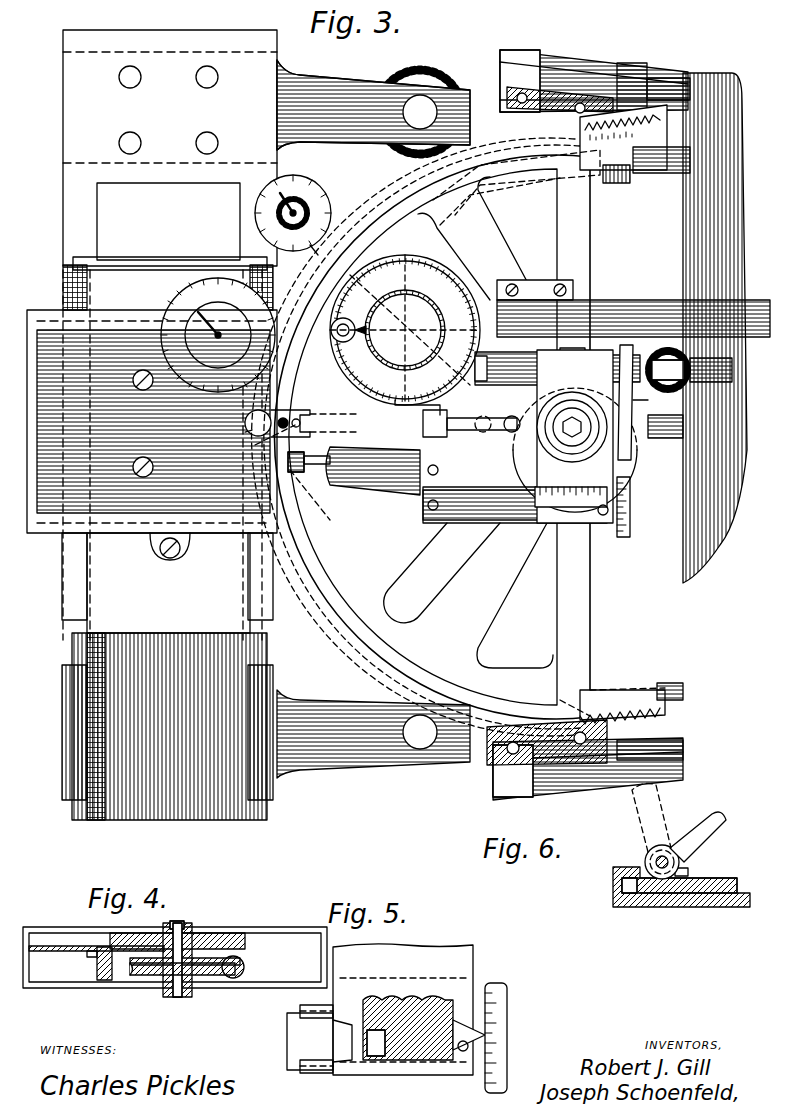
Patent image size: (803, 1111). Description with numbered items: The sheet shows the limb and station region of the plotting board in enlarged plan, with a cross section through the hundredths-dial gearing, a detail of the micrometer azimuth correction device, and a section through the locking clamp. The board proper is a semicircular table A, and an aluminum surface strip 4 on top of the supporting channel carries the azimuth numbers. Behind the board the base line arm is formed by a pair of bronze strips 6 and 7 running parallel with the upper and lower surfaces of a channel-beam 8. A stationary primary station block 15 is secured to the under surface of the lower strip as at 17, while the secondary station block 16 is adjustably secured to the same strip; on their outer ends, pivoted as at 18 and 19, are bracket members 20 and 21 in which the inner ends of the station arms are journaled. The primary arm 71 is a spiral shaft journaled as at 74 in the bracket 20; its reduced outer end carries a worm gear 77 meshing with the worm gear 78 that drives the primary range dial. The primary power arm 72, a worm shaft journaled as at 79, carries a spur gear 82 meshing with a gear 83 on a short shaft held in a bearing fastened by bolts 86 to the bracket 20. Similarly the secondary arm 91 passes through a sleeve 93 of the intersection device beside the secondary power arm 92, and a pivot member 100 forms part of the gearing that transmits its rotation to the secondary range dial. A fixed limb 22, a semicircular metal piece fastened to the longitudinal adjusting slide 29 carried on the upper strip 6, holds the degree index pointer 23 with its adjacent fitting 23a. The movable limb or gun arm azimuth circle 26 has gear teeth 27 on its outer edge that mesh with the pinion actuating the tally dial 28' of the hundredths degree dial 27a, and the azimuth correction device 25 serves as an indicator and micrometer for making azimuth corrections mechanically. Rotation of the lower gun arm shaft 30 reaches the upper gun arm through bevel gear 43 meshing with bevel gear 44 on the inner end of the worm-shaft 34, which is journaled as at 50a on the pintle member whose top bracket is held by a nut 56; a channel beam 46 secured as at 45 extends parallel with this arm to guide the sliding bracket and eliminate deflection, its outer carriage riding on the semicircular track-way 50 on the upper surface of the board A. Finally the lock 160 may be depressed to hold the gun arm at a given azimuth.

In FIG. 3, the aluminum surface strip 4 is at (425, 275).
In FIG. 3, the bronze strip 6 is at (333, 460).
In FIG. 3, the bronze strip 7 is at (169, 435).
In FIG. 3, the channel-beam 8 is at (168, 221).
In FIG. 3, the primary station block 15 is at (340, 90).
In FIG. 3, the secondary station block 16 is at (340, 712).
In FIG. 3, the securing point of primary block 17 is at (199, 86).
In FIG. 3, the pivot of primary bracket 18 is at (420, 112).
In FIG. 3, the pivot of secondary bracket 19 is at (420, 732).
In FIG. 3, the primary bracket member 20 is at (450, 95).
In FIG. 3, the secondary station bracket 21 is at (480, 750).
In FIG. 3, the fixed limb 22 is at (460, 596).
In FIG. 6, the fixed limb 22 is at (614, 880).
In FIG. 3, the degree index pointer 23 is at (275, 412).
In FIG. 3, the roller bracket 23a is at (233, 440).
In FIG. 3, the azimuth correction device 25 is at (575, 443).
In FIG. 3, the gun arm azimuth circle 26 is at (645, 690).
In FIG. 6, the gun arm azimuth circle 26 is at (693, 883).
In FIG. 5, the gun arm azimuth circle 26 is at (470, 978).
In FIG. 3, the gear teeth 27 is at (655, 140).
In FIG. 3, the hundredths degree dial 27a is at (214, 328).
In FIG. 3, the tally dial 28' is at (310, 215).
In FIG. 3, the longitudinal adjusting slide 29 is at (412, 470).
In FIG. 3, the shaft 30 is at (668, 438).
In FIG. 3, the worm-shaft 34 is at (732, 370).
In FIG. 3, the bevel gear 43 is at (678, 410).
In FIG. 3, the bevel gear 44 is at (690, 365).
In FIG. 3, the securing point of channel beam 45 is at (515, 282).
In FIG. 3, the channel beam 46 is at (660, 295).
In FIG. 3, the track-way 50 is at (600, 369).
In FIG. 3, the journal of upper gun arm 50a is at (517, 368).
In FIG. 3, the nut 56 is at (572, 427).
In FIG. 3, the primary arm 71 is at (672, 174).
In FIG. 3, the primary power arm 72 is at (668, 88).
In FIG. 3, the journal of primary arm 74 is at (516, 183).
In FIG. 4, the worm gear 77 is at (244, 967).
In FIG. 4, the worm gear 78 is at (212, 978).
In FIG. 3, the journal of primary power arm 79 is at (560, 89).
In FIG. 3, the spur gear 82 is at (632, 65).
In FIG. 3, the spur gear 83 is at (612, 185).
In FIG. 3, the bolts 86 is at (594, 81).
In FIG. 3, the secondary arm 91 is at (683, 691).
In FIG. 3, the secondary power arm 92 is at (660, 760).
In FIG. 3, the sleeve 93 is at (588, 773).
In FIG. 3, the pivot member 100 is at (619, 425).
In FIG. 3, the lock 160 is at (318, 475).
In FIG. 6, the lock 160 is at (685, 853).
In FIG. 3, the semi-circular table A is at (740, 445).